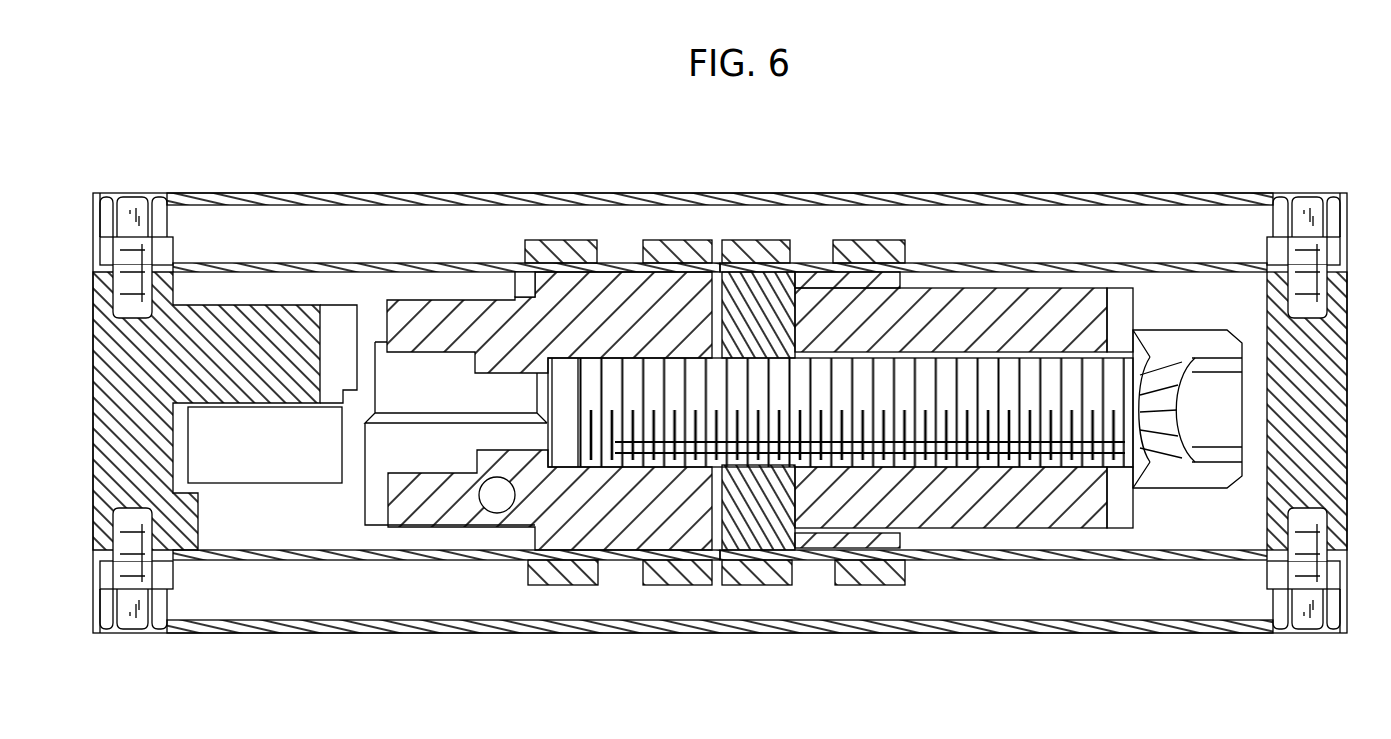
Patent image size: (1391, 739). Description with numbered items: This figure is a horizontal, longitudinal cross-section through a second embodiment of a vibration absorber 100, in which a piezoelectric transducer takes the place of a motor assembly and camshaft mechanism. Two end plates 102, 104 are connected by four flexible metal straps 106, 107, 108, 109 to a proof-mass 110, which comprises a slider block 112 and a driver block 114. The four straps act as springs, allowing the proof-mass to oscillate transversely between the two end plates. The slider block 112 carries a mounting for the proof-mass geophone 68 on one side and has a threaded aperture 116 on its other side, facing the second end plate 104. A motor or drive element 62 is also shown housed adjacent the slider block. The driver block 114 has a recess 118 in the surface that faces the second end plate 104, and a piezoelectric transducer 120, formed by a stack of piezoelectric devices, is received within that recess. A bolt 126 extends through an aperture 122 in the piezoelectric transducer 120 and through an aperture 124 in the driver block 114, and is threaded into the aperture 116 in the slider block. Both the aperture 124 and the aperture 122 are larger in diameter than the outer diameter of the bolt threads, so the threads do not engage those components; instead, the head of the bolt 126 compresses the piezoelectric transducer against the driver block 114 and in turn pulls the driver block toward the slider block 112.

The motor 62 is at (278, 457).
The proof-mass geophone 68 is at (448, 400).
The vibration absorber 100 is at (545, 651).
The end plate 102 is at (105, 520).
The end plate 104 is at (1348, 520).
The flexible metal strap 106 is at (305, 263).
The flexible metal strap 107 is at (440, 560).
The flexible metal strap 108 is at (1058, 560).
The flexible metal strap 109 is at (1057, 263).
The proof-mass 110 is at (811, 248).
The slider block 112 is at (512, 312).
The driver block 114 is at (765, 300).
The threaded aperture 116 is at (572, 462).
The recess 118 is at (885, 298).
The piezoelectric transducer 120 is at (957, 512).
The aperture 122 is at (1000, 448).
The aperture 124 is at (767, 455).
The bolt 126 is at (1200, 482).